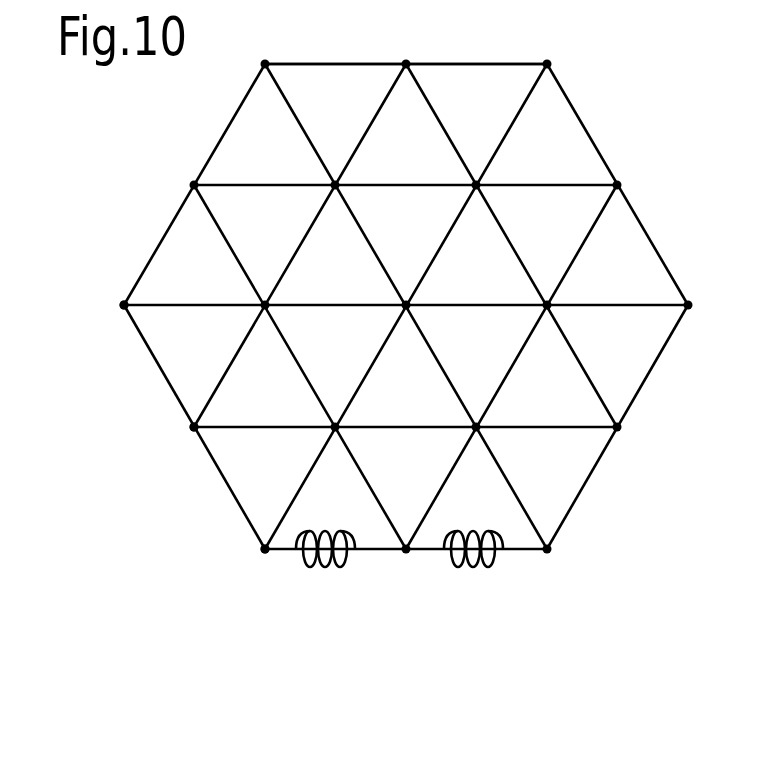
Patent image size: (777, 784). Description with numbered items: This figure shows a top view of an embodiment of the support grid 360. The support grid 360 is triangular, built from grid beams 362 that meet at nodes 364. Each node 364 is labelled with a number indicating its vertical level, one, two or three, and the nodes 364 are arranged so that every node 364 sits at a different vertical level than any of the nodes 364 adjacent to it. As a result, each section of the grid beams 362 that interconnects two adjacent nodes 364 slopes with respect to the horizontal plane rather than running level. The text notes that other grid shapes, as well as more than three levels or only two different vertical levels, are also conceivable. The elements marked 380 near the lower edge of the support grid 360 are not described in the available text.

The support grid 360 is at (492, 601).
The grid beams 362 is at (470, 63).
The nodes 364 is at (258, 547).
The coils / inductors 380 is at (458, 578).